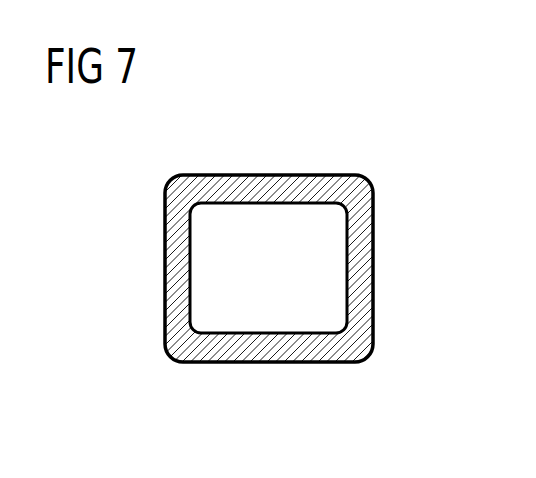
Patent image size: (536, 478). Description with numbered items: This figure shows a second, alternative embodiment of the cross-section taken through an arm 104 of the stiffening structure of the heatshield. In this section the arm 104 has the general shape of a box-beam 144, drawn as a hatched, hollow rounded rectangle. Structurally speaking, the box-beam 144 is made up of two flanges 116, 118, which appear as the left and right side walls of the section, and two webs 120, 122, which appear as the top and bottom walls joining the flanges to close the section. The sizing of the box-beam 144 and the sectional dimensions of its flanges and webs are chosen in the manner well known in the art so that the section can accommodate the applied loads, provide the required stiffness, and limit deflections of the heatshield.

The box-beam 144 is at (358, 140).
The arm 104 is at (155, 213).
The flange 116 is at (173, 268).
The flange 118 is at (365, 268).
The web 120 is at (270, 185).
The web 122 is at (268, 353).